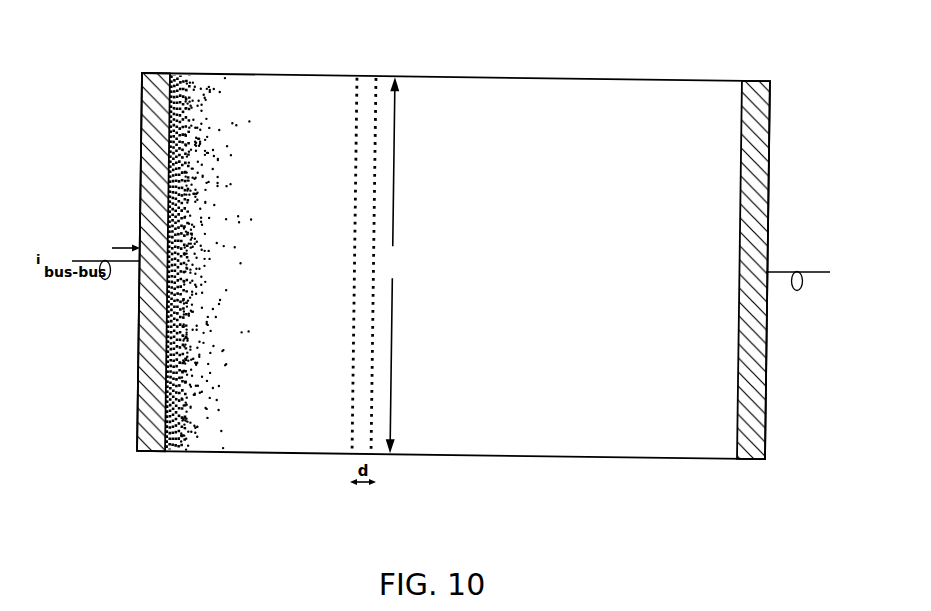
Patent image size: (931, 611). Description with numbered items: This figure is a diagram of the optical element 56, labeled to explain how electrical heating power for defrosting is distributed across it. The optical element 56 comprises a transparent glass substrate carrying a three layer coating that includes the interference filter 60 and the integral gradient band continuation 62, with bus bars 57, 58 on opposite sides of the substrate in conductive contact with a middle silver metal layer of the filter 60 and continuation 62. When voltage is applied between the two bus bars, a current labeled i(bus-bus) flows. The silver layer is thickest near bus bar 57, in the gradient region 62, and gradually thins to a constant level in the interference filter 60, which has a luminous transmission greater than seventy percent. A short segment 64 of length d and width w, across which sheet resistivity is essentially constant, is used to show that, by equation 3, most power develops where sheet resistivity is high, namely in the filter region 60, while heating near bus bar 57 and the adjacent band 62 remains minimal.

The optical element 56 is at (453, 247).
The bus bar 57 is at (142, 127).
The bus bar 58 is at (767, 166).
The interference filter 60 is at (579, 105).
The integral gradient band continuation 62 is at (225, 98).
The segment 64 is at (363, 236).
The cell width dimension 3 is at (393, 265).